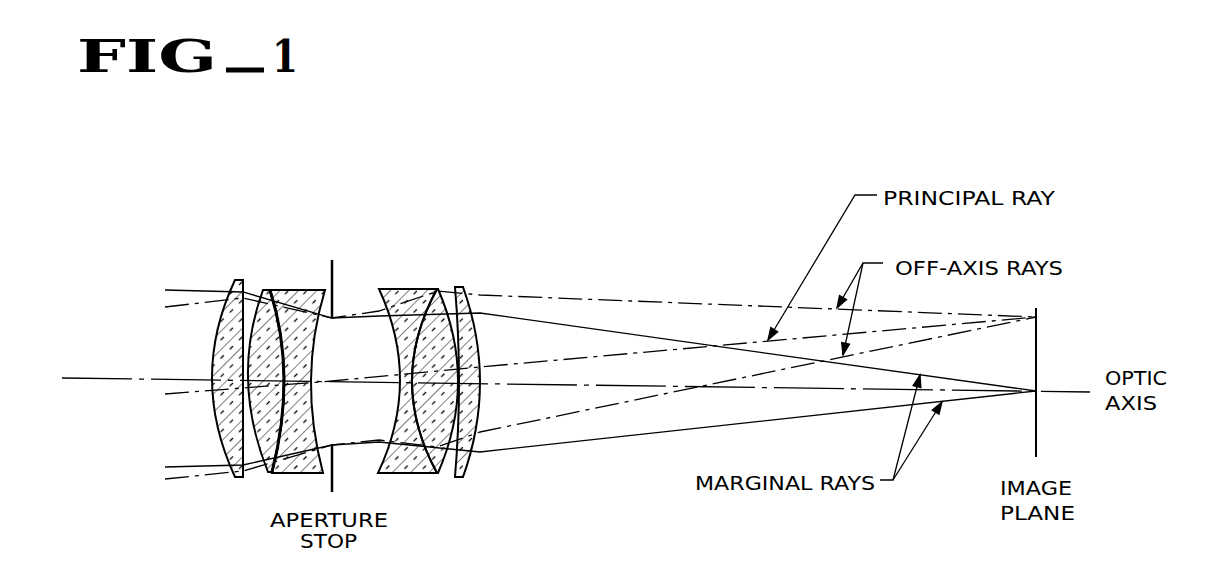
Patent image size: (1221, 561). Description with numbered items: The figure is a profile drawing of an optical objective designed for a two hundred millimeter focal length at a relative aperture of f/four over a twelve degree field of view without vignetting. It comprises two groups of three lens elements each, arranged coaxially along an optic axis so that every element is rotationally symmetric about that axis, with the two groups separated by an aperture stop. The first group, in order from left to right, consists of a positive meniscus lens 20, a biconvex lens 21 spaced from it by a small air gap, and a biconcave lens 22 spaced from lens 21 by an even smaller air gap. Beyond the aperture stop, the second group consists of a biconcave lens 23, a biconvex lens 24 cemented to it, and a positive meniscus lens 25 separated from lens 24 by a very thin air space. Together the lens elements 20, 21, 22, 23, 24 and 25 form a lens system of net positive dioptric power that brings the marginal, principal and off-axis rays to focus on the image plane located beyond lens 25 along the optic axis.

The positive meniscus lens 20 is at (238, 281).
The biconvex lens 21 is at (268, 290).
The biconcave lens 22 is at (284, 291).
The biconcave lens 23 is at (386, 289).
The biconvex lens 24 is at (440, 289).
The positive meniscus lens 25 is at (463, 287).